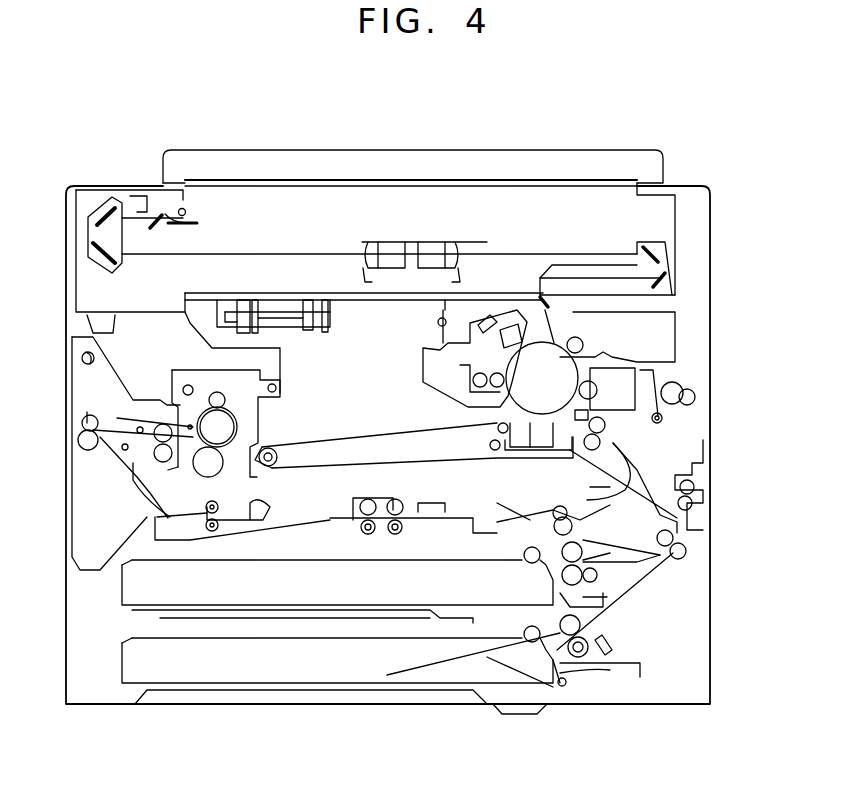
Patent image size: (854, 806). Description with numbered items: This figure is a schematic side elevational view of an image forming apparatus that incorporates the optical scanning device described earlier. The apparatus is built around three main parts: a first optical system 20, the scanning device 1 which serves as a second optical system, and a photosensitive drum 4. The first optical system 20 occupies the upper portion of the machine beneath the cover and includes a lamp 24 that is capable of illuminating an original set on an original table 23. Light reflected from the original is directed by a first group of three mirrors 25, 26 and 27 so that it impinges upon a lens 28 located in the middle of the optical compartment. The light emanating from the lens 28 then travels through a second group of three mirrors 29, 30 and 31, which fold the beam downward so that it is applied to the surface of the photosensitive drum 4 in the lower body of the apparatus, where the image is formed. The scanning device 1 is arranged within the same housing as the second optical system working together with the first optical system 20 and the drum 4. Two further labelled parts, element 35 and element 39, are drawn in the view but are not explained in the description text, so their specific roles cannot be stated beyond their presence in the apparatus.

The scanning device 1 is at (217, 323).
The photosensitive drum 4 is at (625, 357).
The first optical system 20 is at (493, 215).
The original table 23 is at (460, 178).
The lamp 24 is at (185, 210).
The mirror 25 is at (157, 226).
The mirror 26 is at (108, 193).
The mirror 27 is at (93, 257).
The lens 28 is at (390, 240).
The mirror 29 is at (657, 243).
The mirror 30 is at (665, 284).
The mirror 31 is at (555, 343).
The developing unit 35 is at (372, 300).
The mirror holder 39 is at (543, 303).